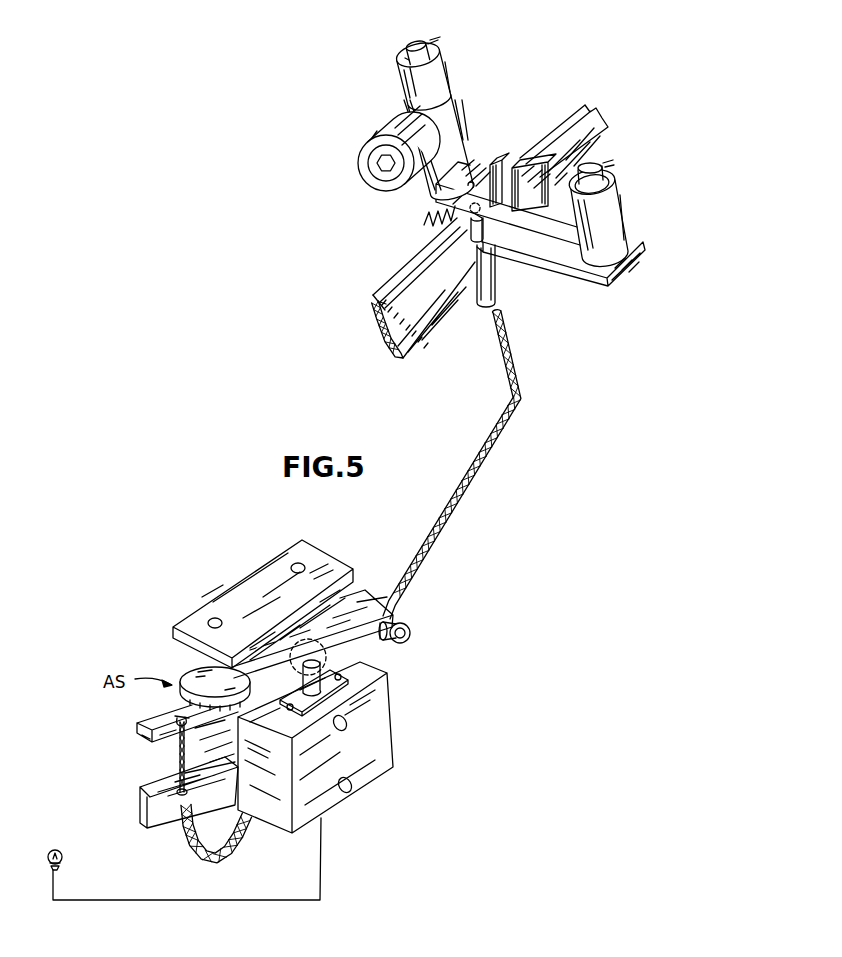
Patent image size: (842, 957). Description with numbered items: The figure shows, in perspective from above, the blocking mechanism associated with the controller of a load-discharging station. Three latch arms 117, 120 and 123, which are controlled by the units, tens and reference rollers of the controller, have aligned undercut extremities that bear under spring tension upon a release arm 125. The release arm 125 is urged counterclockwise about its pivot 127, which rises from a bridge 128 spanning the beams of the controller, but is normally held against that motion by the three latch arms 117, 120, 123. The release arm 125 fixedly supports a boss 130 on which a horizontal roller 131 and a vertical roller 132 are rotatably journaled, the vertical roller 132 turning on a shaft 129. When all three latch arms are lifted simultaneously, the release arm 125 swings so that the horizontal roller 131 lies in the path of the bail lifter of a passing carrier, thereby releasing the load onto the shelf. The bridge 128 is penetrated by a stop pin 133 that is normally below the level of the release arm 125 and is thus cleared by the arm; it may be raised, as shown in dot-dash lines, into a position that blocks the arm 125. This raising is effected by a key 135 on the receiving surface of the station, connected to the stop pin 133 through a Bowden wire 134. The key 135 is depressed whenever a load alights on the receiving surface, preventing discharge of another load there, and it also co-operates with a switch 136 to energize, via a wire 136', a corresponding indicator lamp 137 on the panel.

The latch arm 117 is at (372, 308).
The latch arm 120 is at (376, 326).
The latch arm 123 is at (382, 288).
The release arm 125 is at (487, 157).
The pivot 127 is at (602, 156).
The bridge 128 is at (593, 273).
The shaft 129 is at (416, 43).
The boss 130 is at (457, 118).
The horizontal roller 131 is at (381, 124).
The vertical roller 132 is at (407, 85).
The stop pin 133 is at (424, 218).
The Bowden wire 134 is at (478, 457).
The key 135 is at (158, 712).
The switch 136 is at (335, 736).
The wire 136' is at (211, 859).
The indicator lamp 137 is at (64, 853).